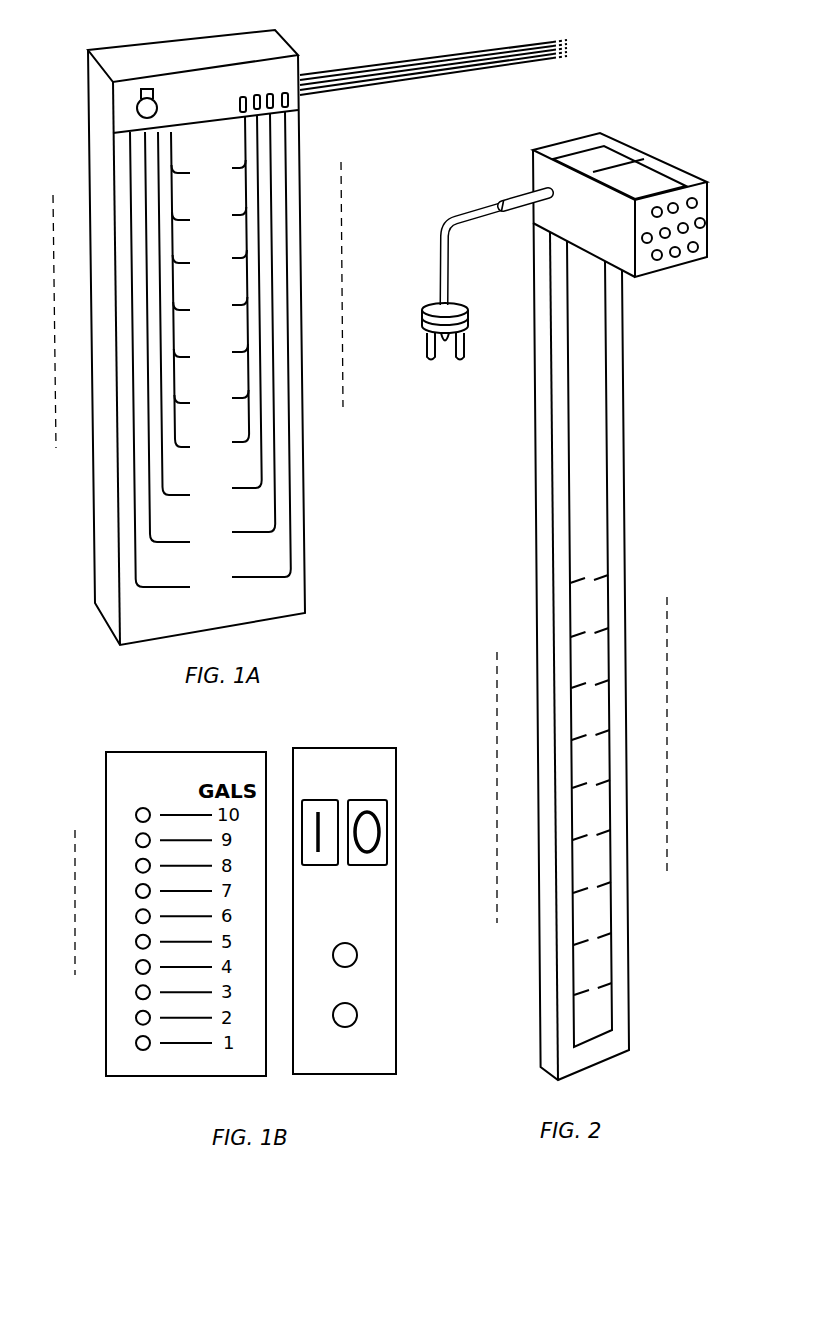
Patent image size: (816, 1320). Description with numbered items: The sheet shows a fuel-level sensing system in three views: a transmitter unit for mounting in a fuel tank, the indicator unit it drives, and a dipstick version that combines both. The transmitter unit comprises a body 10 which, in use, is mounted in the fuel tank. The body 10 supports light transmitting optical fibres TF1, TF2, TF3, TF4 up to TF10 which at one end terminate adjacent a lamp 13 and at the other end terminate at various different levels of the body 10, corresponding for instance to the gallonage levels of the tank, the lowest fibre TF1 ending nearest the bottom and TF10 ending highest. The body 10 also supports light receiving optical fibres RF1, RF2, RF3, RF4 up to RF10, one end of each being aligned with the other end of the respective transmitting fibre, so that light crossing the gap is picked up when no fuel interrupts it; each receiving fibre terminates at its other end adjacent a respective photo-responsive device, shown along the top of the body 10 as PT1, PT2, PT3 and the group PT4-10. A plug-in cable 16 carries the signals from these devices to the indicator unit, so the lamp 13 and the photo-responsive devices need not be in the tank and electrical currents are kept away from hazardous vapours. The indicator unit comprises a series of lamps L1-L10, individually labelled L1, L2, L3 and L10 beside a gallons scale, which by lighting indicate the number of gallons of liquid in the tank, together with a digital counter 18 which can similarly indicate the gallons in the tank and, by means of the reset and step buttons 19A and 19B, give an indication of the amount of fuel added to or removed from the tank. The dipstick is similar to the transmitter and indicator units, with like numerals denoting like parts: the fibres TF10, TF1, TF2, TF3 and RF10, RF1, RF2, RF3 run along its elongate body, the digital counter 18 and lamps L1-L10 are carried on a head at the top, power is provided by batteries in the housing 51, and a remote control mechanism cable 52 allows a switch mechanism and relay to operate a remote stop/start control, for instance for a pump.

In FIG. 1A, the body 10 is at (282, 594).
In FIG. 1A, the lamp 13 is at (139, 111).
In FIG. 1A, the plug-in cable 16 is at (404, 58).
In FIG. 1B, the digital counter 18 is at (398, 813).
In FIG. 2, the digital counter 18 is at (653, 161).
In FIG. 1B, the reset button 19A is at (348, 943).
In FIG. 1B, the step button 19B is at (352, 1004).
In FIG. 2, the housing 51 is at (541, 172).
In FIG. 2, the remote control mechanism cable 52 is at (521, 196).
In FIG. 1A, the photo-responsive device PT1 is at (286, 91).
In FIG. 1A, the photo-responsive device PT2 is at (270, 92).
In FIG. 1A, the photo-responsive device PT3 is at (257, 93).
In FIG. 1A, the photo-responsive devices PT4-10 is at (243, 95).
In FIG. 1A, the light transmitting optical fibre TF1 is at (133, 572).
In FIG. 2, the light transmitting optical fibre TF1 is at (581, 996).
In FIG. 1A, the light transmitting optical fibre TF2 is at (147, 528).
In FIG. 2, the light transmitting optical fibre TF2 is at (581, 946).
In FIG. 1A, the light transmitting optical fibre TF3 is at (160, 478).
In FIG. 2, the light transmitting optical fibre TF3 is at (580, 893).
In FIG. 1A, the light transmitting optical fibre TF4 is at (172, 430).
In FIG. 1A, the light transmitting optical fibre TF10 is at (172, 157).
In FIG. 2, the light transmitting optical fibre TF10 is at (578, 583).
In FIG. 1A, the light receiving optical fibre RF1 is at (289, 550).
In FIG. 2, the light receiving optical fibre RF1 is at (603, 983).
In FIG. 1A, the light receiving optical fibre RF2 is at (276, 505).
In FIG. 2, the light receiving optical fibre RF2 is at (603, 933).
In FIG. 1A, the light receiving optical fibre RF3 is at (261, 460).
In FIG. 2, the light receiving optical fibre RF3 is at (603, 882).
In FIG. 1A, the light receiving optical fibre RF4 is at (249, 418).
In FIG. 1A, the light receiving optical fibre RF10 is at (246, 143).
In FIG. 2, the light receiving optical fibre RF10 is at (601, 576).
In FIG. 1B, the lamp L1 is at (136, 1043).
In FIG. 1B, the lamp L2 is at (136, 1017).
In FIG. 1B, the lamp L3 is at (136, 992).
In FIG. 1B, the lamp L10 is at (136, 817).
In FIG. 2, the lamps L1-L10 is at (676, 259).